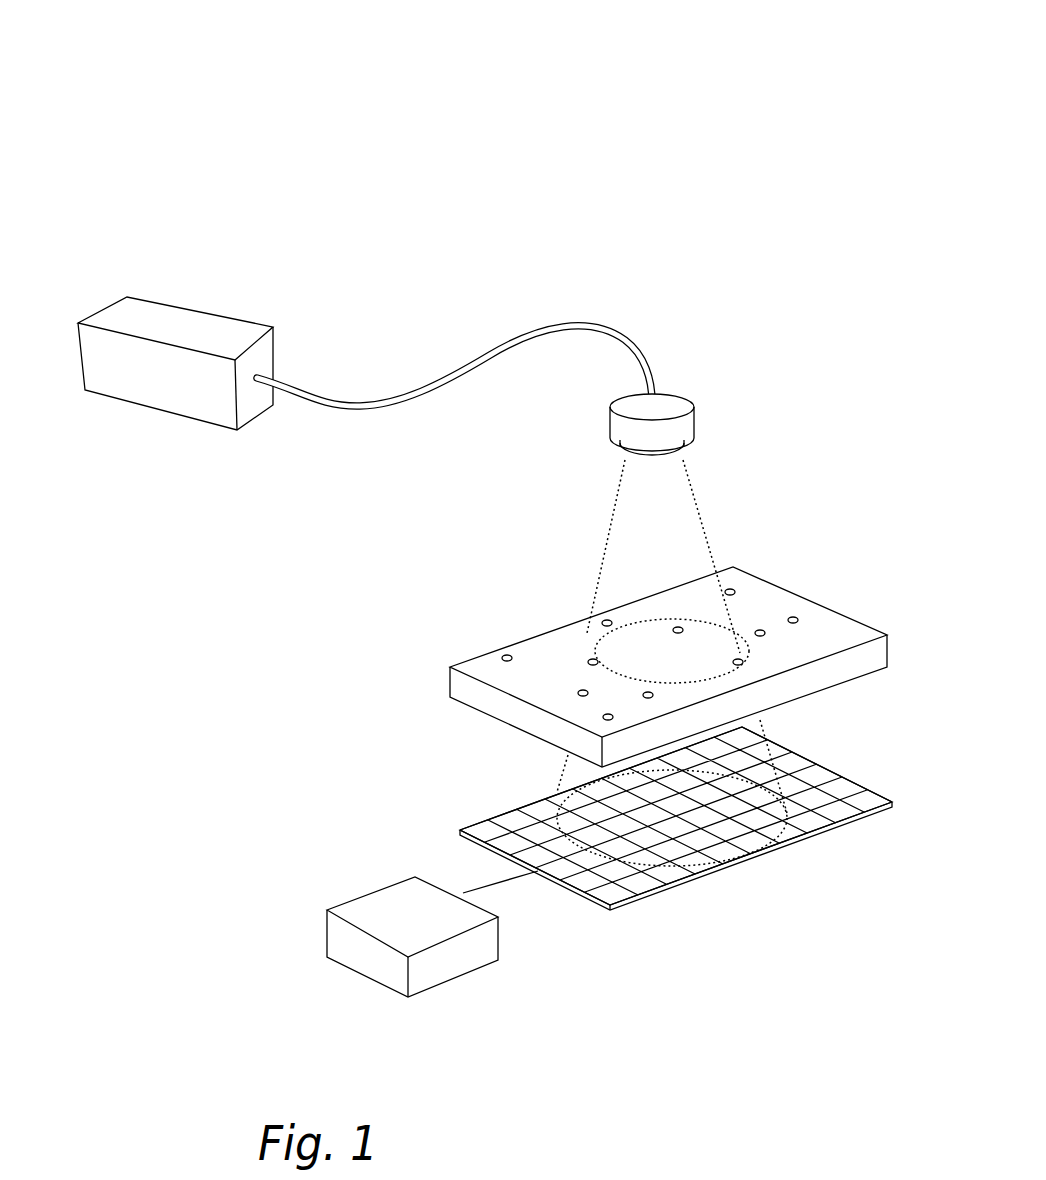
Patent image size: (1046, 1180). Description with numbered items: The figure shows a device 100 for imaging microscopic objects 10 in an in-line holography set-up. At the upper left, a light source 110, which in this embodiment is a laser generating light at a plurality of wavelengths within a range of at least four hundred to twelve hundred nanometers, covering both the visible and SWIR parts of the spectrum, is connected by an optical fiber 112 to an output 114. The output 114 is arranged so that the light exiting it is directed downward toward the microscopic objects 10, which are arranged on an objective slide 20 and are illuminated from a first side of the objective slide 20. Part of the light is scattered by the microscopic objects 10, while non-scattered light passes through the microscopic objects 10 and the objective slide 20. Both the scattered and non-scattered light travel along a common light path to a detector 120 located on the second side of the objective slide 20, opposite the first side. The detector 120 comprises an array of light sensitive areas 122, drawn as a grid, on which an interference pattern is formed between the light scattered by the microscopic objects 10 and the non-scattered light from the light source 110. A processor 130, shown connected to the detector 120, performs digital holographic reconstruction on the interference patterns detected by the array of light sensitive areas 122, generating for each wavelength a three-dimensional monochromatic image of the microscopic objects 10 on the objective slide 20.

The device 100 is at (568, 192).
The light source 110 is at (145, 388).
The optical fiber 112 is at (421, 395).
The output 114 is at (635, 468).
The microscopic objects 10 is at (593, 662).
The objective slide 20 is at (822, 673).
The detector 120 is at (694, 847).
The array of light sensitive areas 122 is at (645, 882).
The processor 130 is at (458, 963).